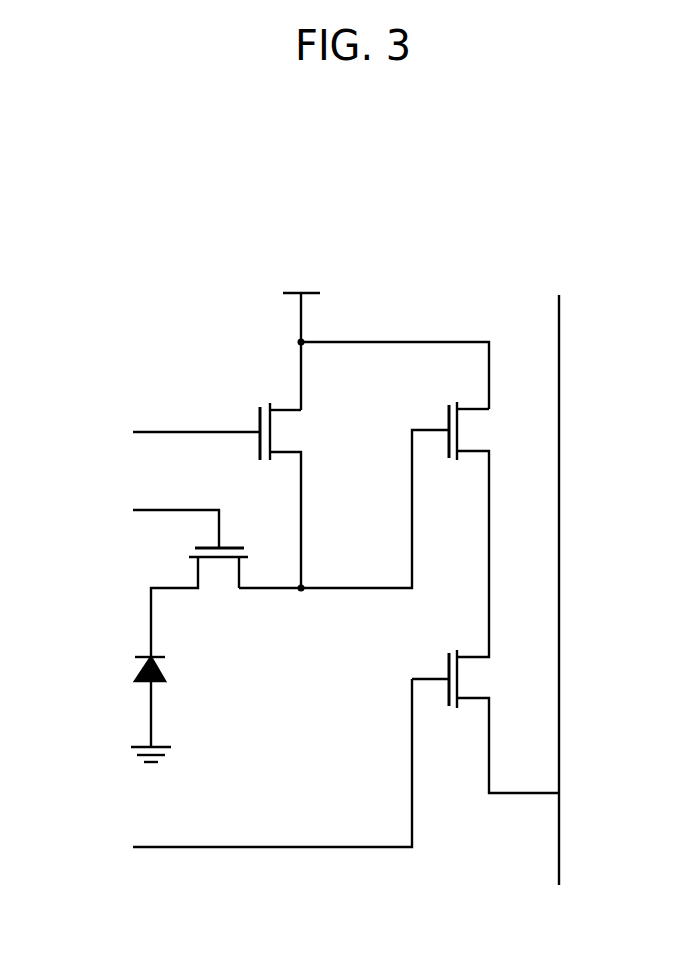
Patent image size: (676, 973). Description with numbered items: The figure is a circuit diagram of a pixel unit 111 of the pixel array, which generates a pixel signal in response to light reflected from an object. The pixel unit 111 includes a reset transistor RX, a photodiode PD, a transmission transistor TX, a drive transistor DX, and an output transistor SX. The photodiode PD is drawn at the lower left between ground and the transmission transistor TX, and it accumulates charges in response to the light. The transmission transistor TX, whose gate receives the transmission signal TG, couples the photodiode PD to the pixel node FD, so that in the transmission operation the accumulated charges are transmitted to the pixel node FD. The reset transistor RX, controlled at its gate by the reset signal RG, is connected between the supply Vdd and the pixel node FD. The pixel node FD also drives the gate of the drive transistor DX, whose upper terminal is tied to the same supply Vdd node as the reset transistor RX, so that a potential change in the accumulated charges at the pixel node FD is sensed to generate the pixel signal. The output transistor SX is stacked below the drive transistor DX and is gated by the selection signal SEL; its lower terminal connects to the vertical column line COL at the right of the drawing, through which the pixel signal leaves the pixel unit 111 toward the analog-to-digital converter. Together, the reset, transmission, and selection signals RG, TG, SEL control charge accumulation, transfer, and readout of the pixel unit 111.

The pixel unit 111 is at (510, 283).
The power supply voltage Vdd is at (386, 337).
The reset transistor RX is at (295, 495).
The reset signal RG is at (177, 433).
The pixel node FD is at (344, 528).
The drive transistor DX is at (483, 529).
The output transistor SX is at (485, 721).
The selection signal SEL is at (250, 770).
The column line COL is at (562, 608).
The transmission signal TG is at (156, 522).
The transmission transistor TX is at (199, 602).
The photodiode PD is at (126, 667).